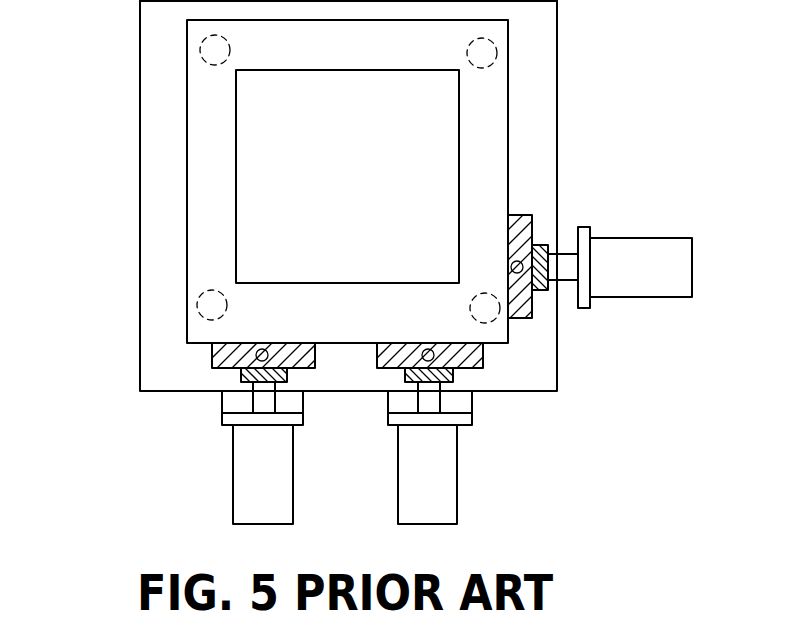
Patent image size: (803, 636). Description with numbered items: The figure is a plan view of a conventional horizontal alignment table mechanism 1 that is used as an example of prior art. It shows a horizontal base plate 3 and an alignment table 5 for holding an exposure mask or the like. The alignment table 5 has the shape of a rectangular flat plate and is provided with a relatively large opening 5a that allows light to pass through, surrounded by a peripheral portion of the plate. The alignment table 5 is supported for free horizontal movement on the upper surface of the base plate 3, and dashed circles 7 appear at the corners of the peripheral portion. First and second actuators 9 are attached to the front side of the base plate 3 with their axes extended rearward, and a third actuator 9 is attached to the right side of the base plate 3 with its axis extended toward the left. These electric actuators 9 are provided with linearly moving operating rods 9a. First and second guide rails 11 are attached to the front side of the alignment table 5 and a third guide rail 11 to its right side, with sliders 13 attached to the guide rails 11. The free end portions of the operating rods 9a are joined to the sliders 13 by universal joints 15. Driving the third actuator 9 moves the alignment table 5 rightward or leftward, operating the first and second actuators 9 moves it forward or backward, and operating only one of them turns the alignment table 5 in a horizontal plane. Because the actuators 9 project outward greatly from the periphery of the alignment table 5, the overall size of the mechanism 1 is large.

The alignment table mechanism 1 is at (118, 289).
The base plate 3 is at (163, 217).
The alignment table 5 is at (197, 153).
The opening 5a is at (233, 119).
The support bearings 7 is at (229, 50).
The actuator 9 is at (243, 488).
The operating rod 9a is at (255, 400).
The guide rail 11 is at (213, 357).
The slider 13 is at (278, 381).
The universal joint 15 is at (255, 347).